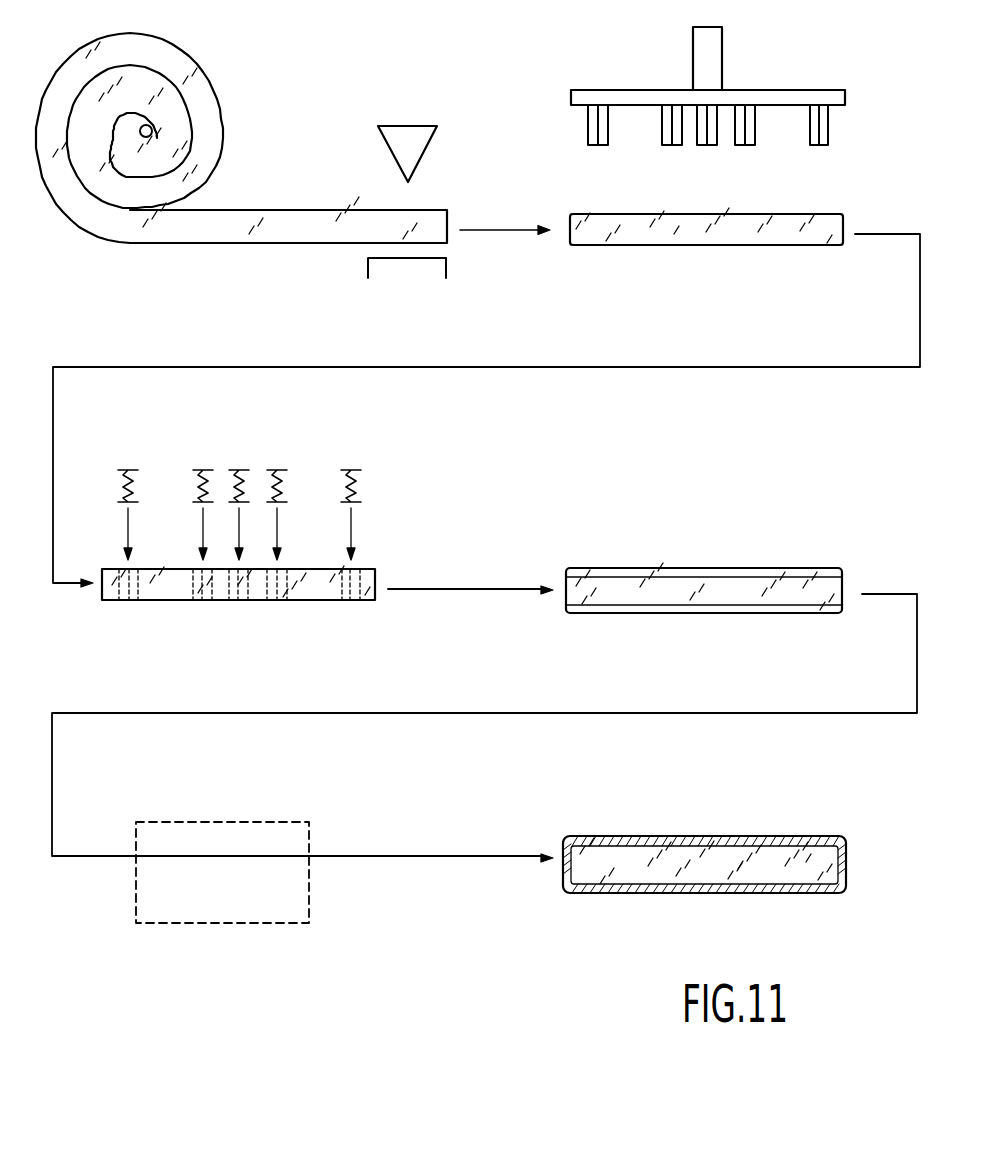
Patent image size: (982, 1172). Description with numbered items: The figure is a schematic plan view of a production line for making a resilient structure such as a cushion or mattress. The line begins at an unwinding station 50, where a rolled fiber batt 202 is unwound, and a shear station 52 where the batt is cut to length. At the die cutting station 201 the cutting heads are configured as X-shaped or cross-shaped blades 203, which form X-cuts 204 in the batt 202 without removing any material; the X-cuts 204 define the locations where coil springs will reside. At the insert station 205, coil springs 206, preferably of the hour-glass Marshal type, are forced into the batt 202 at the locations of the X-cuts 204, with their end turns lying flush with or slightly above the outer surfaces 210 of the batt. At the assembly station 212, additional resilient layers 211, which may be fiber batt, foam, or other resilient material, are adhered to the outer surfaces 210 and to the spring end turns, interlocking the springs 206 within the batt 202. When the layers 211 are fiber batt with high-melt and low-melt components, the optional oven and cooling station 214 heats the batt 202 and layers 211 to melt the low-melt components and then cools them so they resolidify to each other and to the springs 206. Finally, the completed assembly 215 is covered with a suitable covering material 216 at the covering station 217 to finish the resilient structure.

The unwinding station 50 is at (136, 256).
The shear station 52 is at (431, 117).
The die cutting station 201 is at (708, 99).
The batt 202 is at (501, 554).
The X-shaped blades 203 is at (792, 158).
The X-cuts 204 is at (392, 565).
The insert station 205 is at (289, 495).
The coil springs 206 is at (351, 470).
The outer surfaces 210 is at (808, 265).
The additional resilient layers 211 is at (783, 613).
The assembly station 212 is at (637, 546).
The optional oven and cooling station 214 is at (288, 822).
The assembly 215 is at (667, 565).
The covering material 216 is at (708, 837).
The covering station 217 is at (580, 818).